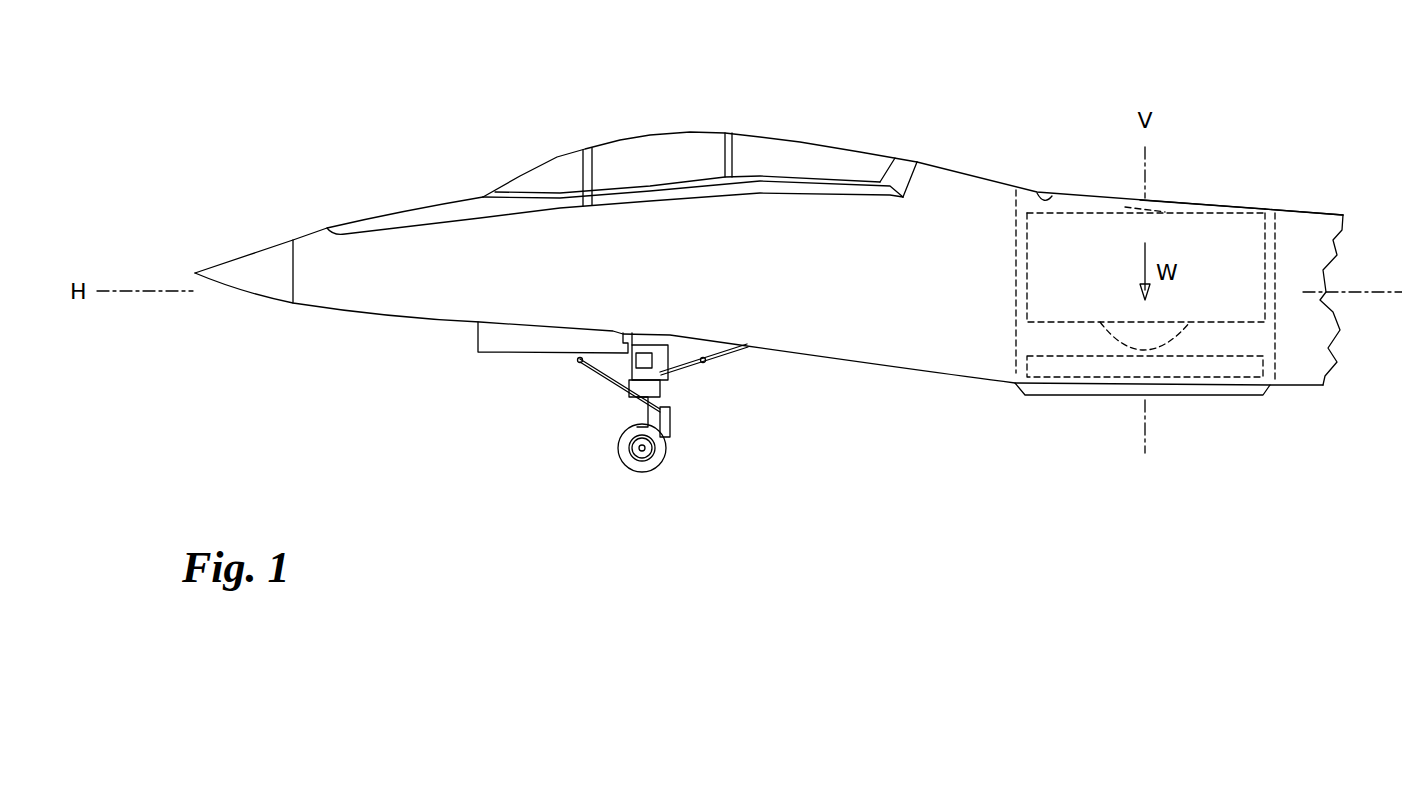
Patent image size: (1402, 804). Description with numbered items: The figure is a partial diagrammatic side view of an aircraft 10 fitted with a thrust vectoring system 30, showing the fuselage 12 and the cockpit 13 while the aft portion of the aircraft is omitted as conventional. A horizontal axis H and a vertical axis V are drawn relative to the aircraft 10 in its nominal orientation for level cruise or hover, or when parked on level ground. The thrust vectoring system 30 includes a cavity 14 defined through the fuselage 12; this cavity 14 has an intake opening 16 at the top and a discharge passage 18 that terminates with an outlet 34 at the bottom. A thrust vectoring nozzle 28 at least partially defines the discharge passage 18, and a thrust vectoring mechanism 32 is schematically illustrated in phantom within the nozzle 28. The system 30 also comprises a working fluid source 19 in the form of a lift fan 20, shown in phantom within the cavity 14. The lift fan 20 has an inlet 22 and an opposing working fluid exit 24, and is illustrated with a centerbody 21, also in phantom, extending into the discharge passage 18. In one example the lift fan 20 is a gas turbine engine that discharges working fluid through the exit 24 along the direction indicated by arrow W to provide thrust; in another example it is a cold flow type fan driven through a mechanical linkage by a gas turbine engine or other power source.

The aircraft 10 is at (915, 140).
The fuselage 12 is at (1307, 212).
The cockpit 13 is at (557, 157).
The cavity 14 is at (1265, 208).
The intake opening 16 is at (1037, 191).
The discharge passage 18 is at (1275, 330).
The working fluid source 19 is at (1277, 258).
The lift fan 20 is at (1192, 206).
The centerbody 21 is at (1172, 350).
The inlet 22 is at (1085, 212).
The working fluid exit 24 is at (1045, 323).
The thrust vectoring nozzle 28 is at (1268, 386).
The thrust vectoring system 30 is at (1025, 397).
The thrust vectoring mechanism 32 is at (1025, 368).
The outlet 34 is at (1233, 396).